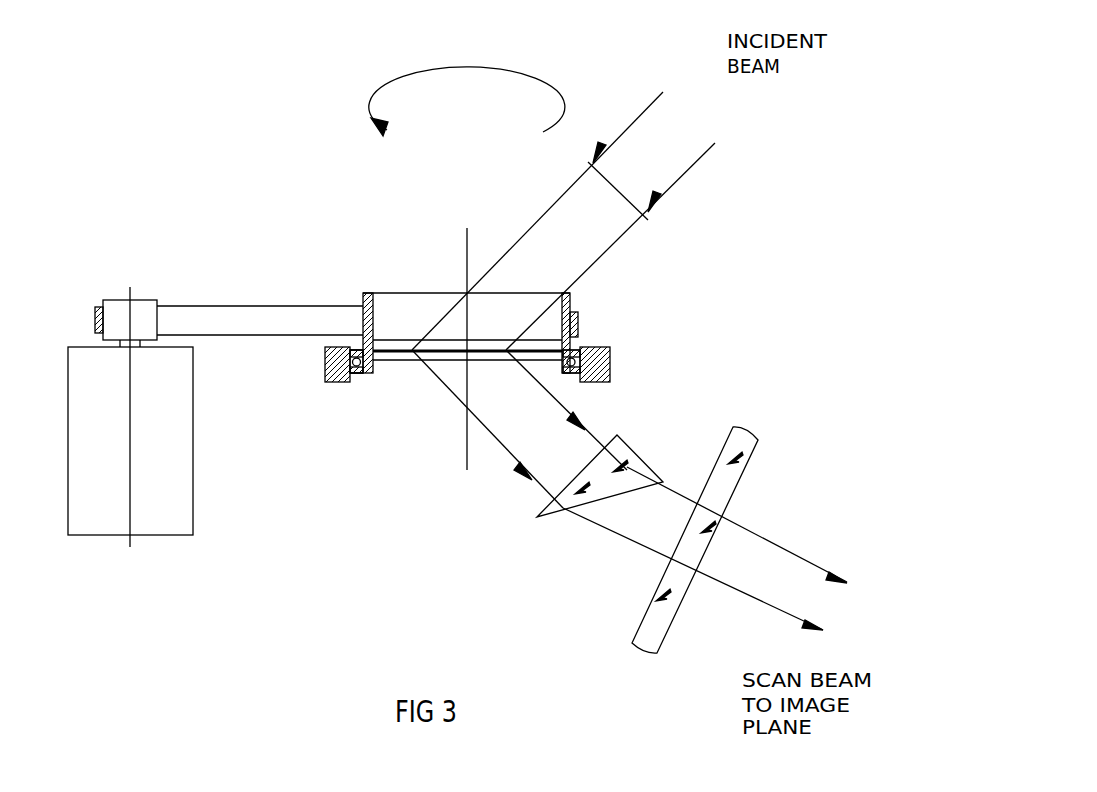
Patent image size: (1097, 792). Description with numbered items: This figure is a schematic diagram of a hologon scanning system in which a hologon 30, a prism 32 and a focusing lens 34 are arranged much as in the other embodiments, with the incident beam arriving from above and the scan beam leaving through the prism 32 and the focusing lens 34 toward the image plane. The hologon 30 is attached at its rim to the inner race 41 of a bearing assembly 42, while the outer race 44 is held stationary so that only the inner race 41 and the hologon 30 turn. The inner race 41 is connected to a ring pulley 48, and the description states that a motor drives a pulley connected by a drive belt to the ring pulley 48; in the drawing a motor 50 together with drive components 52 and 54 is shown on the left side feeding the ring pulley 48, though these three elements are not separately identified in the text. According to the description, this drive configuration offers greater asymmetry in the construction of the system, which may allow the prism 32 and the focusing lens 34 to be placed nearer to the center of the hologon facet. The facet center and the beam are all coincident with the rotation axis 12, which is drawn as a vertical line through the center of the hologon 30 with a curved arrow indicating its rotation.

The rotation axis 12 is at (467, 220).
The hologon 30 is at (407, 347).
The ring pulley 48 is at (365, 293).
The bearing assembly 42 is at (590, 335).
The outer race 44 is at (345, 385).
The inner race 41 is at (365, 378).
The motor 50 is at (187, 470).
The coupling 52 is at (147, 300).
The drive shaft 54 is at (265, 318).
The prism 32 is at (632, 467).
The focusing lens 34 is at (723, 495).